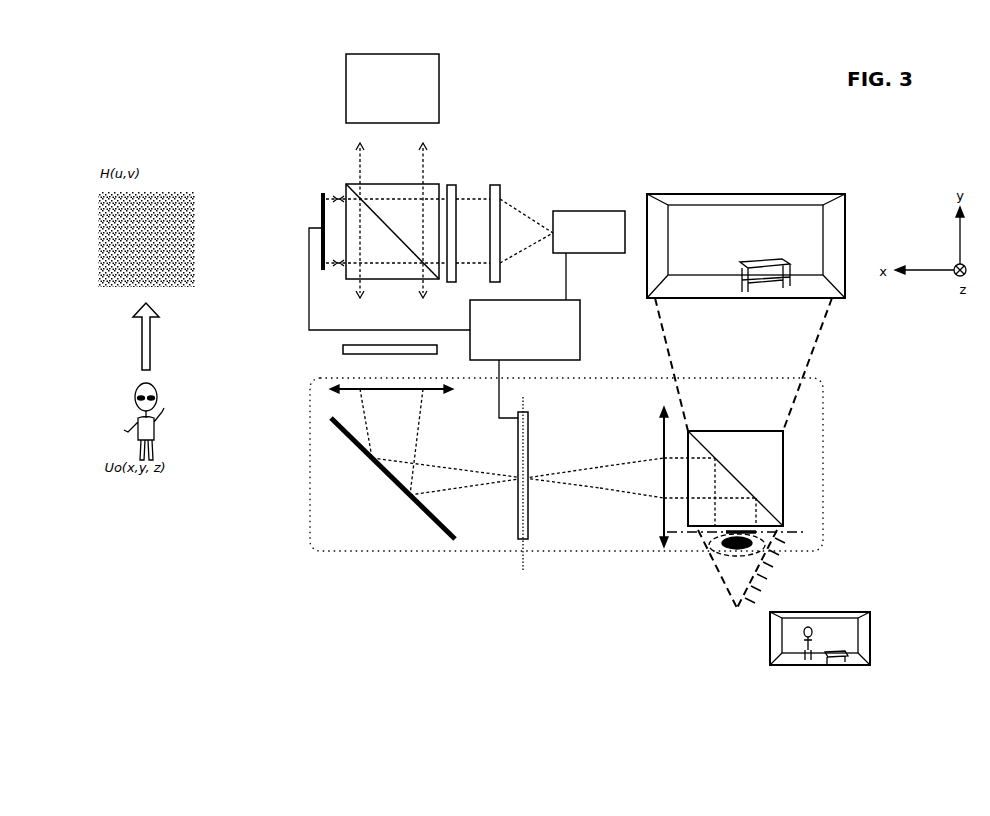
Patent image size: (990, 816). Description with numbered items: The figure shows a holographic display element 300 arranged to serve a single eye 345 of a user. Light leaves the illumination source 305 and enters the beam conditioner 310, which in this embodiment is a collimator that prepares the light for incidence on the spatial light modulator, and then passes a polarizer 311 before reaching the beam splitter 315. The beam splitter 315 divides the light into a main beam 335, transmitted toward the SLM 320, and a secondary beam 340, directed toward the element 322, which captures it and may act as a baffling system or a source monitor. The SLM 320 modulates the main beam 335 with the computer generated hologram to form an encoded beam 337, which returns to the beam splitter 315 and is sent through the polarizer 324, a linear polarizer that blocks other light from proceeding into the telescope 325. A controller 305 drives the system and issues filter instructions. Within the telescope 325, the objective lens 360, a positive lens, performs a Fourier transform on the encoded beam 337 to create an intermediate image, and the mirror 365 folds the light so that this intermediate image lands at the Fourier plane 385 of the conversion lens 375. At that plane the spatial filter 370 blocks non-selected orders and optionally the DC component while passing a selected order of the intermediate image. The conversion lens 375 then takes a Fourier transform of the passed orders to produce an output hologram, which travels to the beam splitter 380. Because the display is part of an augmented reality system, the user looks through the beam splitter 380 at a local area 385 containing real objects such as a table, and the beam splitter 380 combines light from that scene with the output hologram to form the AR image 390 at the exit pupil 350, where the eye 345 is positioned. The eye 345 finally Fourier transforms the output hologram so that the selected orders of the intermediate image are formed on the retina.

The holographic display element 300 is at (145, 67).
The element 322 is at (392, 88).
The beam splitter 315 is at (357, 183).
The secondary beam 340 is at (424, 158).
The polarizer 311 is at (453, 185).
The beam conditioner 310 is at (495, 185).
The illumination source 305 is at (547, 314).
The main beam 335 is at (340, 192).
The spatial light modulator 320 is at (321, 218).
The encoded beam 337 is at (352, 282).
The polarizer 324 is at (342, 351).
The telescope 325 is at (311, 525).
The objective lens 360 is at (333, 390).
The mirror 365 is at (353, 443).
The spatial filter 370 is at (518, 522).
The Fourier plane 385 is at (845, 272).
The conversion lens 375 is at (660, 522).
The beam splitter 380 is at (783, 458).
The exit pupil 350 is at (700, 533).
The eye 345 is at (741, 590).
The AR image 390 is at (783, 533).